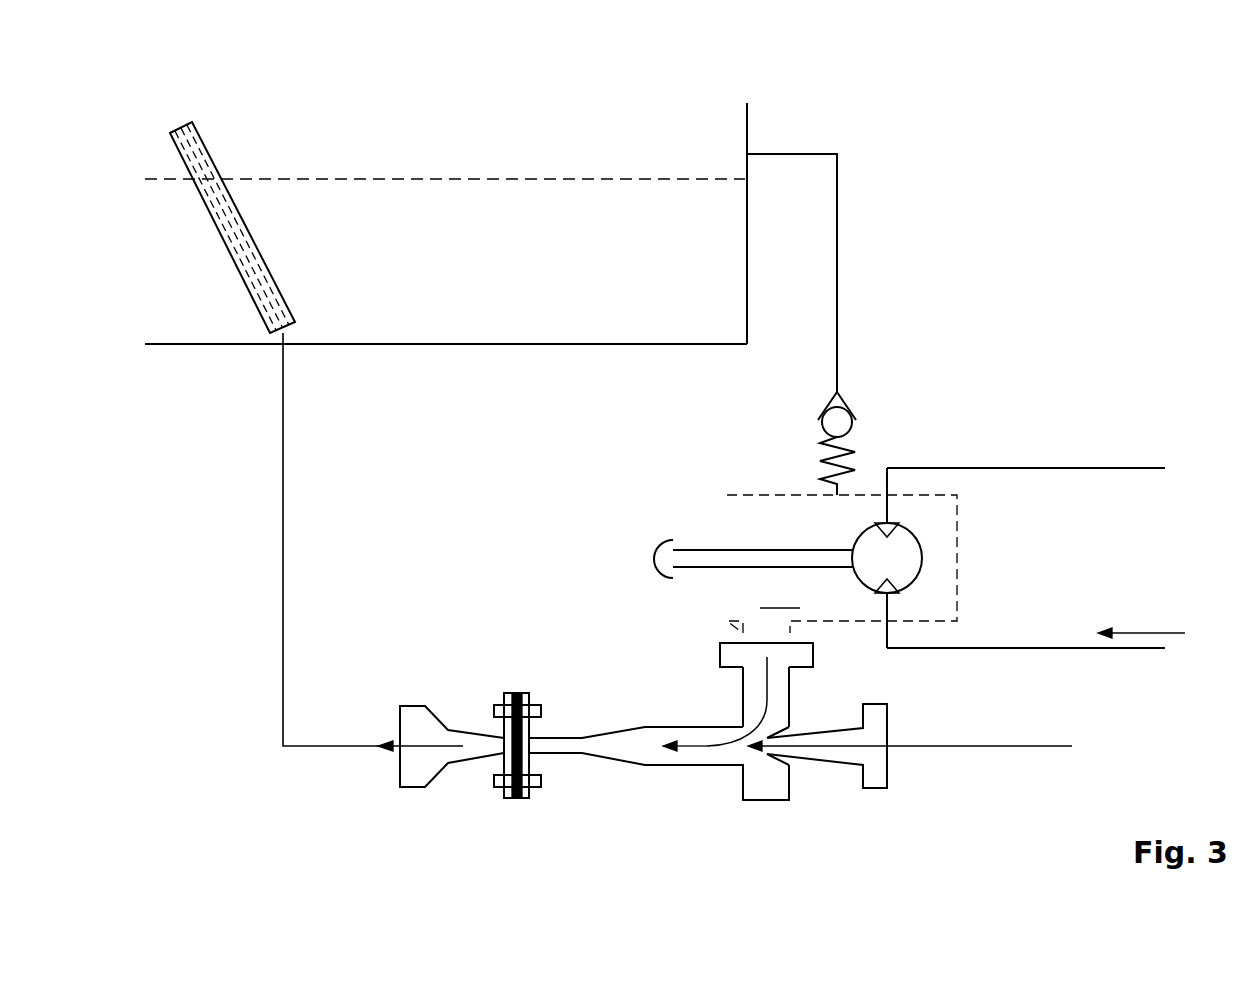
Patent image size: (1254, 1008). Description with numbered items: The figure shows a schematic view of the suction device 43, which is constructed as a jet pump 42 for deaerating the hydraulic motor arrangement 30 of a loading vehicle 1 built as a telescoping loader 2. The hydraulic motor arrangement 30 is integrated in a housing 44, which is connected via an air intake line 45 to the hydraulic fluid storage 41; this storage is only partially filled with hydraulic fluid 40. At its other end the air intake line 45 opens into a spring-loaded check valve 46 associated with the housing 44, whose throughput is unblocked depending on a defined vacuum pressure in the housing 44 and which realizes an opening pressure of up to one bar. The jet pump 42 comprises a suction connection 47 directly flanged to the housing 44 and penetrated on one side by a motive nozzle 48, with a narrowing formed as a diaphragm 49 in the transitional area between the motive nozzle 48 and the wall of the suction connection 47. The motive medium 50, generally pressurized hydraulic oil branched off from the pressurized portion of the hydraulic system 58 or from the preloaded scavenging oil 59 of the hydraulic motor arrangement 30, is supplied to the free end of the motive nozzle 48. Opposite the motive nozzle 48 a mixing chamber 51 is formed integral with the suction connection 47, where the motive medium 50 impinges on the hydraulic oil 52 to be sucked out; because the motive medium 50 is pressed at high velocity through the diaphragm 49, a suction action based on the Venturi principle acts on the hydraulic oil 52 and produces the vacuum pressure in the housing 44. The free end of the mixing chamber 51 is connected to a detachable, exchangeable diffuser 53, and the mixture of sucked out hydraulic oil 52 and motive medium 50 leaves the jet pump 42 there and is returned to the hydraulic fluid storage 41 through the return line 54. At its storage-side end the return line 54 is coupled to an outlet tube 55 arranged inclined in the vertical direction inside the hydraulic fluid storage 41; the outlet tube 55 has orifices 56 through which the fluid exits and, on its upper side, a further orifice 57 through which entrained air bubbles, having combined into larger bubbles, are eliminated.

The loading vehicle 1 is at (1113, 163).
The telescoping loader 2 is at (1095, 147).
The hydraulic motor arrangement 30 is at (888, 560).
The hydraulic fluid 40 is at (607, 263).
The hydraulic fluid storage 41 is at (668, 150).
The jet pump 42 is at (708, 744).
The suction device 43 is at (708, 744).
The housing 44 is at (940, 562).
The air intake line 45 is at (837, 207).
The check valve 46 is at (840, 427).
The suction connection 47 is at (728, 653).
The motive nozzle 48 is at (842, 737).
The diaphragm 49 is at (767, 750).
The motive medium 50 is at (1033, 731).
The mixing chamber 51 is at (640, 748).
The hydraulic oil 52 is at (707, 745).
The diffuser 53 is at (455, 795).
The return line 54 is at (283, 578).
The outlet tube 55 is at (200, 160).
The orifices 56 is at (218, 234).
The further orifice 57 is at (176, 118).
The hydraulic system 58 is at (1052, 457).
The scavenging oil 59 is at (1148, 633).